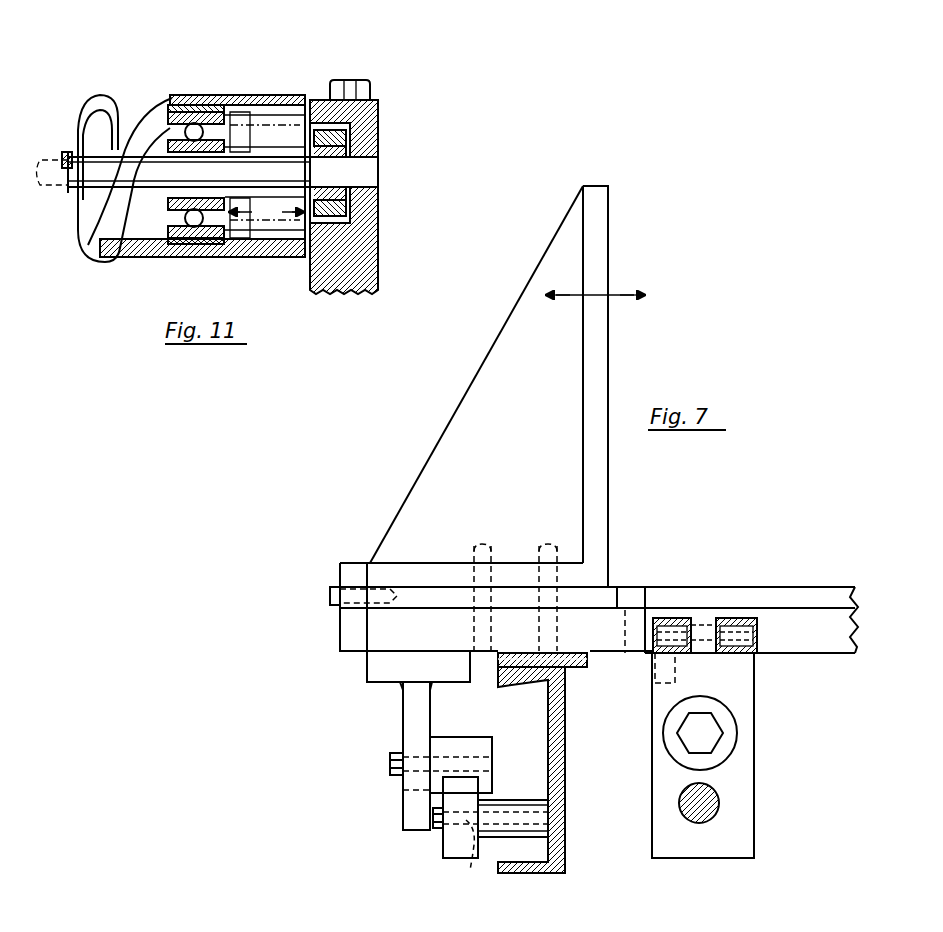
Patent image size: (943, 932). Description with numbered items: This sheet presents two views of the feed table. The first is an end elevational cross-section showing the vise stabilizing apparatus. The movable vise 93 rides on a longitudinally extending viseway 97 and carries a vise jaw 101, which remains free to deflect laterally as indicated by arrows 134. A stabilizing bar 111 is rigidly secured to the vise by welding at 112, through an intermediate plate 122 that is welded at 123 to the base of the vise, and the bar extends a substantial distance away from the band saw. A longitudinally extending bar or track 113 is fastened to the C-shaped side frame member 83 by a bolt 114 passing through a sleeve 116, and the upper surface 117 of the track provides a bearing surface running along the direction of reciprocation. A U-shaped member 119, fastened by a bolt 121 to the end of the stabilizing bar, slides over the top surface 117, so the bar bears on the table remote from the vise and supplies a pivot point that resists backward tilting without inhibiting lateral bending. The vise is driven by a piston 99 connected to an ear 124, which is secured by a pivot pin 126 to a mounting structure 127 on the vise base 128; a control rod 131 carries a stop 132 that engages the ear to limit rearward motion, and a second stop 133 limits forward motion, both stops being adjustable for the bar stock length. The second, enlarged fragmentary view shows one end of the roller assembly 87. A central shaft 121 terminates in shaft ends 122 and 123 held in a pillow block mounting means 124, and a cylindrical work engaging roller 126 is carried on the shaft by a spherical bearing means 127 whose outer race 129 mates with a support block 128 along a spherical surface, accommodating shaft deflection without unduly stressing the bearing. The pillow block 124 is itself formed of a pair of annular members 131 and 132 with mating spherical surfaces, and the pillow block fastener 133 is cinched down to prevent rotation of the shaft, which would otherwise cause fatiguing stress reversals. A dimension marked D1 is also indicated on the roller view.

In FIG. 11, the roller assembly 87 is at (128, 86).
In FIG. 7, the movable vise 93 is at (455, 392).
In FIG. 7, the viseway 97 is at (533, 660).
In FIG. 7, the piston 99 is at (720, 805).
In FIG. 7, the vise jaw 101 is at (610, 225).
In FIG. 7, the stabilizing bar 111 is at (403, 732).
In FIG. 7, the weld 112 is at (400, 687).
In FIG. 7, the bar or track 113 is at (440, 840).
In FIG. 7, the bolt 114 is at (472, 870).
In FIG. 7, the sleeve 116 is at (530, 795).
In FIG. 7, the upper surface 117 is at (470, 776).
In FIG. 7, the U-shaped member 119 is at (452, 737).
In FIG. 11, the bolt / central shaft 121 is at (68, 152).
In FIG. 7, the bolt / central shaft 121 is at (390, 764).
In FIG. 11, the intermediate plate / shaft end 122 is at (365, 175).
In FIG. 7, the intermediate plate / shaft end 122 is at (380, 672).
In FIG. 7, the weld / shaft end 123 is at (370, 655).
In FIG. 11, the ear / mounting means (pillow block) 124 is at (383, 126).
In FIG. 7, the ear / mounting means (pillow block) 124 is at (745, 836).
In FIG. 11, the pivot pin / work engaging roller 126 is at (160, 258).
In FIG. 7, the pivot pin / work engaging roller 126 is at (705, 645).
In FIG. 11, the mounting structure / bearing means 127 is at (232, 133).
In FIG. 7, the mounting structure / bearing means 127 is at (757, 622).
In FIG. 11, the base / support block 128 is at (240, 97).
In FIG. 7, the base / support block 128 is at (835, 650).
In FIG. 11, the outer race 129 is at (188, 108).
In FIG. 11, the control rod / annular member 131 is at (348, 138).
In FIG. 11, the stop / annular member 132 is at (375, 205).
In FIG. 7, the stop / annular member 132 is at (740, 728).
In FIG. 11, the second stop / pillow block fastener 133 is at (366, 80).
In FIG. 7, the arrows 134 is at (620, 292).
In FIG. 7, the C-shaped side frame member 83 is at (568, 725).
In FIG. 11, the diameter D1 is at (266, 213).